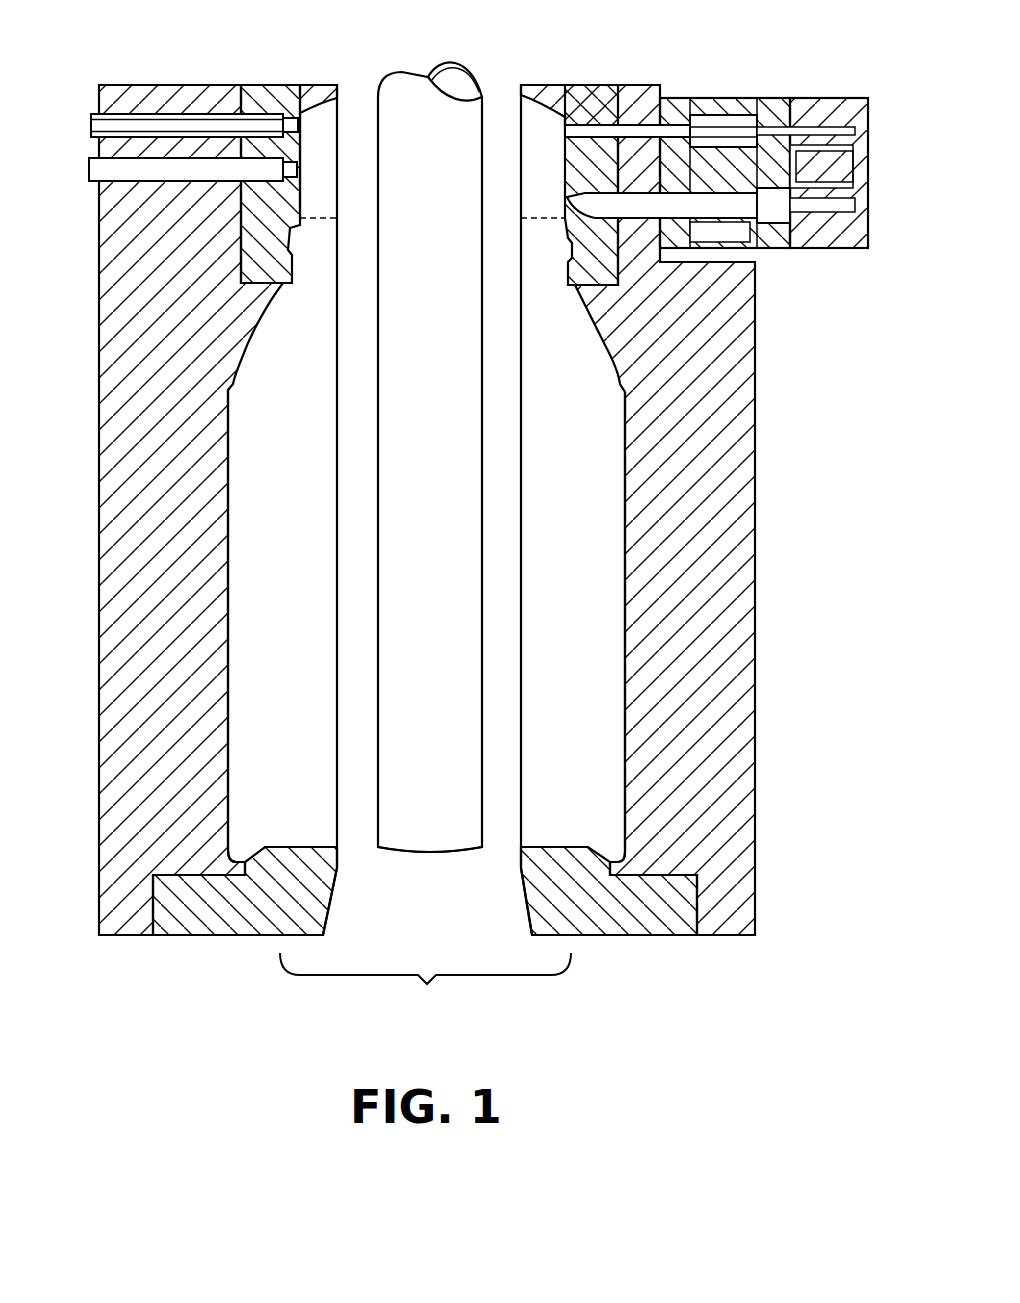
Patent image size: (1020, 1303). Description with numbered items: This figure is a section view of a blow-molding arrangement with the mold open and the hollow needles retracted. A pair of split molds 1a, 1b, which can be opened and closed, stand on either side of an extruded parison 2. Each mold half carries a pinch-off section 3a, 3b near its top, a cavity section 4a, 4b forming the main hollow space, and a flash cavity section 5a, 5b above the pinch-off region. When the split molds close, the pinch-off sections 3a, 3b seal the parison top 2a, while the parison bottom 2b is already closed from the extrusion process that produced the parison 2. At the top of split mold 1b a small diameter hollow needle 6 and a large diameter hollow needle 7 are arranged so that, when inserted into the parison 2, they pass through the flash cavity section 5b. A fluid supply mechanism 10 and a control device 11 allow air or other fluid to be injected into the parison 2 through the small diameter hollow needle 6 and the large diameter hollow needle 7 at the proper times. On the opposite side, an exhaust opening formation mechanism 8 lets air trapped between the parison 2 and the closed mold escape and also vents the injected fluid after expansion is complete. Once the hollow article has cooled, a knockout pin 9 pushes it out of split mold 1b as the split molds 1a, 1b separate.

The split mold 1a is at (108, 318).
The split mold 1b is at (750, 445).
The parison 2 is at (476, 107).
The parison top 2a is at (430, 73).
The parison bottom 2b is at (390, 852).
The pinch-off section 3a is at (317, 125).
The pinch-off section 3b is at (540, 86).
The cavity section 4a is at (255, 603).
The cavity section 4b is at (605, 590).
The flash cavity section 5a is at (318, 104).
The flash cavity section 5b is at (545, 125).
The small diameter hollow needle 6 is at (707, 130).
The large diameter hollow needle 7 is at (718, 207).
The exhaust opening formation mechanism 8 is at (90, 125).
The knockout pin 9 is at (88, 168).
The fluid supply mechanism 10 is at (757, 110).
The control device 11 is at (850, 107).